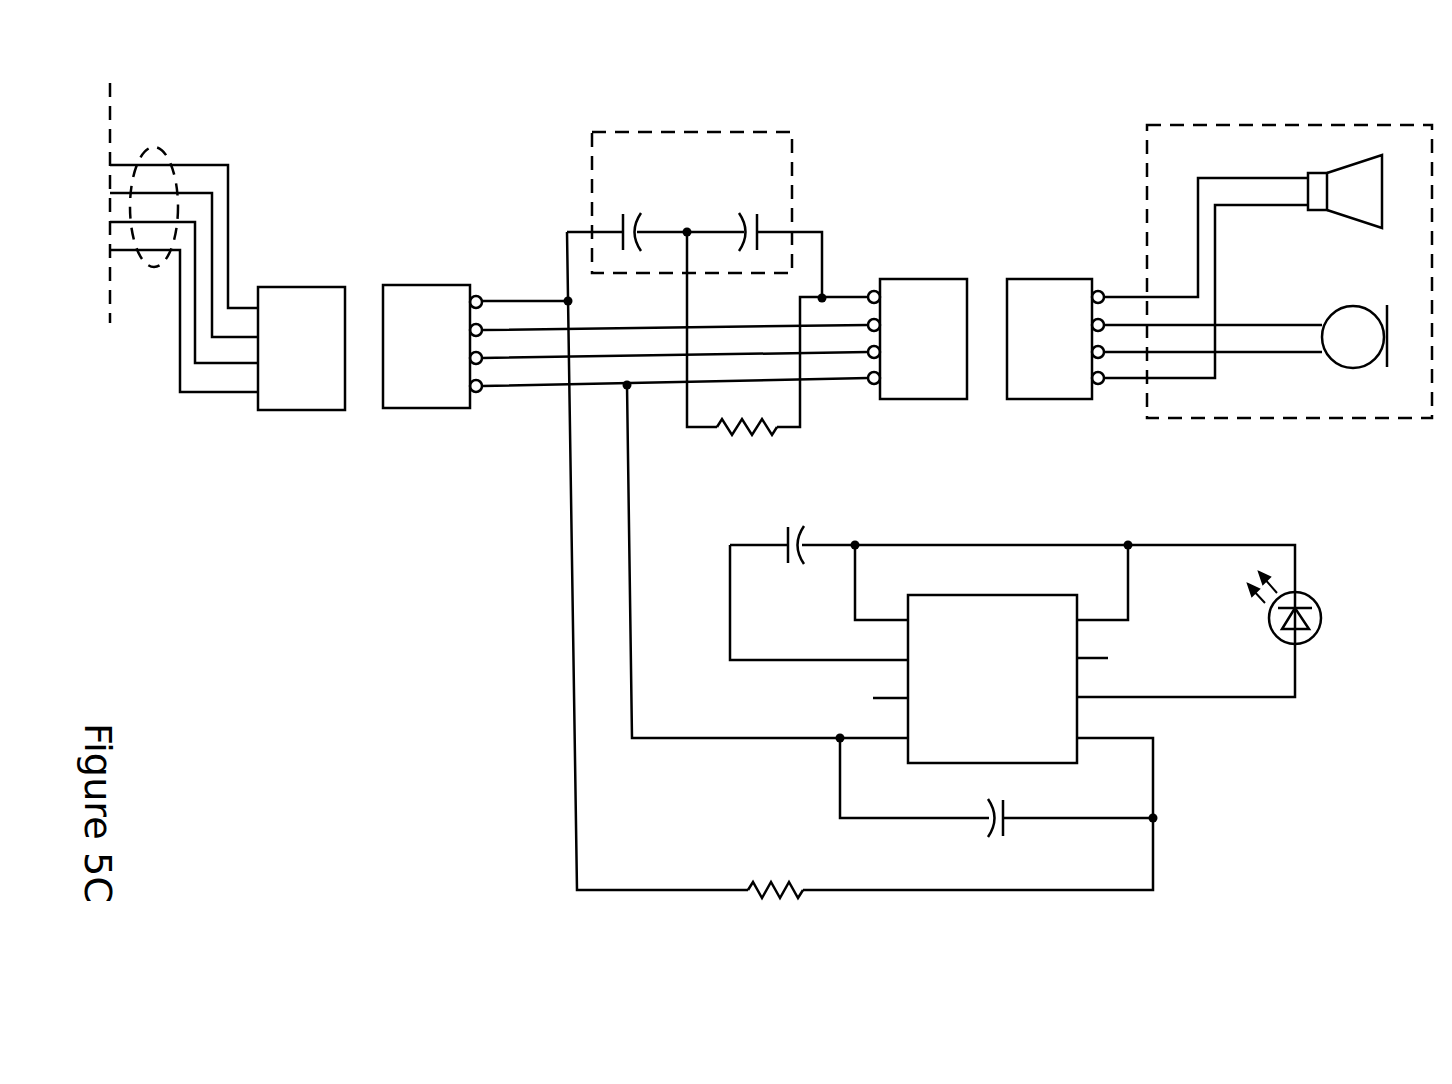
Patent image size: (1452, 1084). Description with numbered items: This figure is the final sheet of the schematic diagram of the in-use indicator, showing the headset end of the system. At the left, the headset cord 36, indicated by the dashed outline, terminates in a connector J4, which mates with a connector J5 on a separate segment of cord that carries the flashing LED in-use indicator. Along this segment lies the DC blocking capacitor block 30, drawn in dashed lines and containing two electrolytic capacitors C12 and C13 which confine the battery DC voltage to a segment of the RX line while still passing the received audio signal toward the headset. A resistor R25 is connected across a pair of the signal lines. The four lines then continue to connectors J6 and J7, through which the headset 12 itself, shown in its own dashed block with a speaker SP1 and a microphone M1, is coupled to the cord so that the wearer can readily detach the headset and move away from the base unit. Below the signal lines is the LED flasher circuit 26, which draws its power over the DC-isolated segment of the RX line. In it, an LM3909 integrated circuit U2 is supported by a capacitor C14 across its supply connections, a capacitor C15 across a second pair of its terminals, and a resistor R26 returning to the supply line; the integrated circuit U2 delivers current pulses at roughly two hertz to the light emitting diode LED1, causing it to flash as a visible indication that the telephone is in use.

The headset cord 36 is at (150, 150).
The connector J4 is at (302, 287).
The connector J5 is at (435, 285).
The LED flasher circuit 26 is at (474, 573).
The DC blocking capacitor 30 is at (592, 150).
The capacitor C12 is at (640, 212).
The capacitor C13 is at (745, 210).
The resistor R25 is at (745, 440).
The connector J6 is at (932, 279).
The connector J7 is at (1037, 279).
The headset 12 is at (1147, 143).
The speaker SP1 is at (1335, 215).
The microphone M1 is at (1330, 355).
The capacitor C14 is at (798, 527).
The integrated circuit U2 is at (970, 595).
The light emitting diode LED1 is at (1320, 600).
The capacitor C15 is at (1000, 840).
The resistor R26 is at (776, 880).